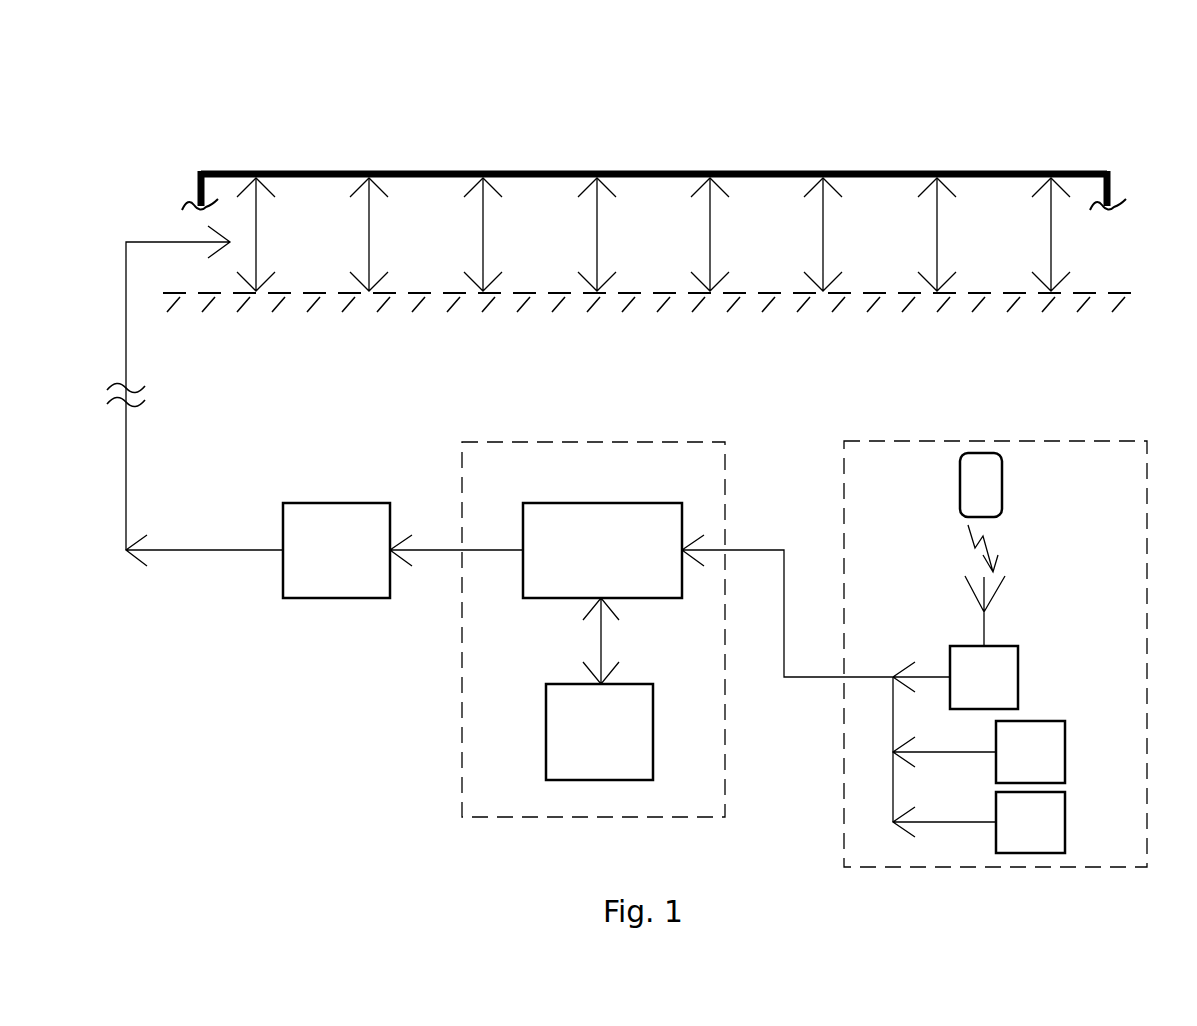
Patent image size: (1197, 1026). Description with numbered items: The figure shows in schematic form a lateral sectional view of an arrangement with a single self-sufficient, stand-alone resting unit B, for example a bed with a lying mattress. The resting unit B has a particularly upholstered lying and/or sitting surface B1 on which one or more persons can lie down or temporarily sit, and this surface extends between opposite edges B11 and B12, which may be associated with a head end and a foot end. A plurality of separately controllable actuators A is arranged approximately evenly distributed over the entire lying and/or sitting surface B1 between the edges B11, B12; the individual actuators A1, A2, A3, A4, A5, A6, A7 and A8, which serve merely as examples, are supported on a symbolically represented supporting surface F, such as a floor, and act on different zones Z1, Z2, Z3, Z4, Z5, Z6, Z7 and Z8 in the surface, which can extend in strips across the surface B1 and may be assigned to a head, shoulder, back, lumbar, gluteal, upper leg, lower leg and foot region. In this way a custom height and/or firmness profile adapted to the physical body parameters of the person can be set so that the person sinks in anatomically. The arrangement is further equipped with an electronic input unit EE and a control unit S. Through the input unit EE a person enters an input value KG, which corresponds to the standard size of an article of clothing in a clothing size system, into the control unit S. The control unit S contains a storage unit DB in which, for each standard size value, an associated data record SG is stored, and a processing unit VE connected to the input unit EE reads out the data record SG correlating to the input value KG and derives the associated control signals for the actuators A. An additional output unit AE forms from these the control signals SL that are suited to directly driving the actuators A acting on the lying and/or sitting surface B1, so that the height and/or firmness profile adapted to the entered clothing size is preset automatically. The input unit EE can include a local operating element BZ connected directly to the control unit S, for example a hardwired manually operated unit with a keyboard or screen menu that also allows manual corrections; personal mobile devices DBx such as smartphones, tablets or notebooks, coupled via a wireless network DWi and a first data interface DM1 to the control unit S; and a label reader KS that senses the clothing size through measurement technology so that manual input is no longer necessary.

The resting unit B is at (538, 195).
The lying and/or sitting surface B1 is at (557, 180).
The edge B11 is at (197, 175).
The edge B12 is at (1112, 177).
The zone Z1 is at (254, 170).
The zone Z2 is at (367, 170).
The zone Z3 is at (481, 170).
The zone Z4 is at (595, 170).
The zone Z5 is at (708, 170).
The zone Z6 is at (821, 170).
The zone Z7 is at (935, 170).
The zone Z8 is at (1049, 170).
The actuators A is at (708, 243).
The actuator A1 is at (256, 294).
The actuator A2 is at (369, 294).
The actuator A3 is at (483, 294).
The actuator A4 is at (597, 294).
The actuator A5 is at (710, 294).
The actuator A6 is at (823, 294).
The actuator A7 is at (937, 294).
The actuator A8 is at (1051, 294).
The supporting surface F is at (1098, 292).
The control signals SL is at (124, 443).
The output unit AE is at (333, 510).
The control unit S is at (497, 455).
The processing unit VE is at (610, 510).
The data record SG is at (601, 640).
The storage unit DB is at (574, 684).
The input value KG is at (768, 550).
The electronic input unit EE is at (866, 456).
The personal mobile devices DBx is at (983, 487).
The wireless network DWi is at (985, 628).
The first data interface DM1 is at (1000, 682).
The local operating element BZ is at (1050, 755).
The label reader KS is at (1050, 837).